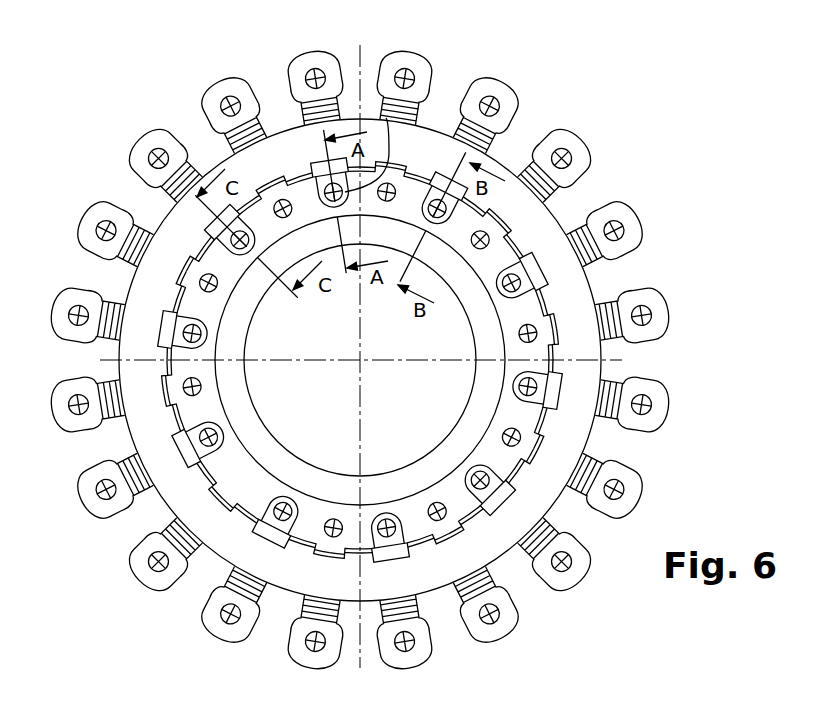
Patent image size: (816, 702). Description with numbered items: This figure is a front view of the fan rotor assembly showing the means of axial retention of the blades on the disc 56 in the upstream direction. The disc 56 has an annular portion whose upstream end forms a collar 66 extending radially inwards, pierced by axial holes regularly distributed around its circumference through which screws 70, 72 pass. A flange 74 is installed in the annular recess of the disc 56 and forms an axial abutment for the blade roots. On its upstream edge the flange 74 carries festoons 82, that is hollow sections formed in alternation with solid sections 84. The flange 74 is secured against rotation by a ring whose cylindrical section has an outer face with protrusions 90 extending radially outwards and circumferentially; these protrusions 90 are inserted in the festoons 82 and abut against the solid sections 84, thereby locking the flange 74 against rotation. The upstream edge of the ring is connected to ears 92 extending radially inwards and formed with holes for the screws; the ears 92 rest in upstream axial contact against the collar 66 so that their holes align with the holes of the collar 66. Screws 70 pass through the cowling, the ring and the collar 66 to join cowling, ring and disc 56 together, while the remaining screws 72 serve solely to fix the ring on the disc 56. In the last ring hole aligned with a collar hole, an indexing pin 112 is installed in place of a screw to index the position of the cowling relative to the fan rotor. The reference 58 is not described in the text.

The disc 56 is at (230, 338).
The housing 58 is at (502, 160).
The collar 66 is at (193, 307).
The screws 70 is at (387, 120).
The screws 72 is at (210, 245).
The flange 74 is at (280, 157).
The festoons 82 is at (603, 250).
The solid sections 84 is at (520, 240).
The protrusions 90 is at (547, 454).
The ears 92 is at (198, 448).
The indexing pin 112 is at (416, 186).